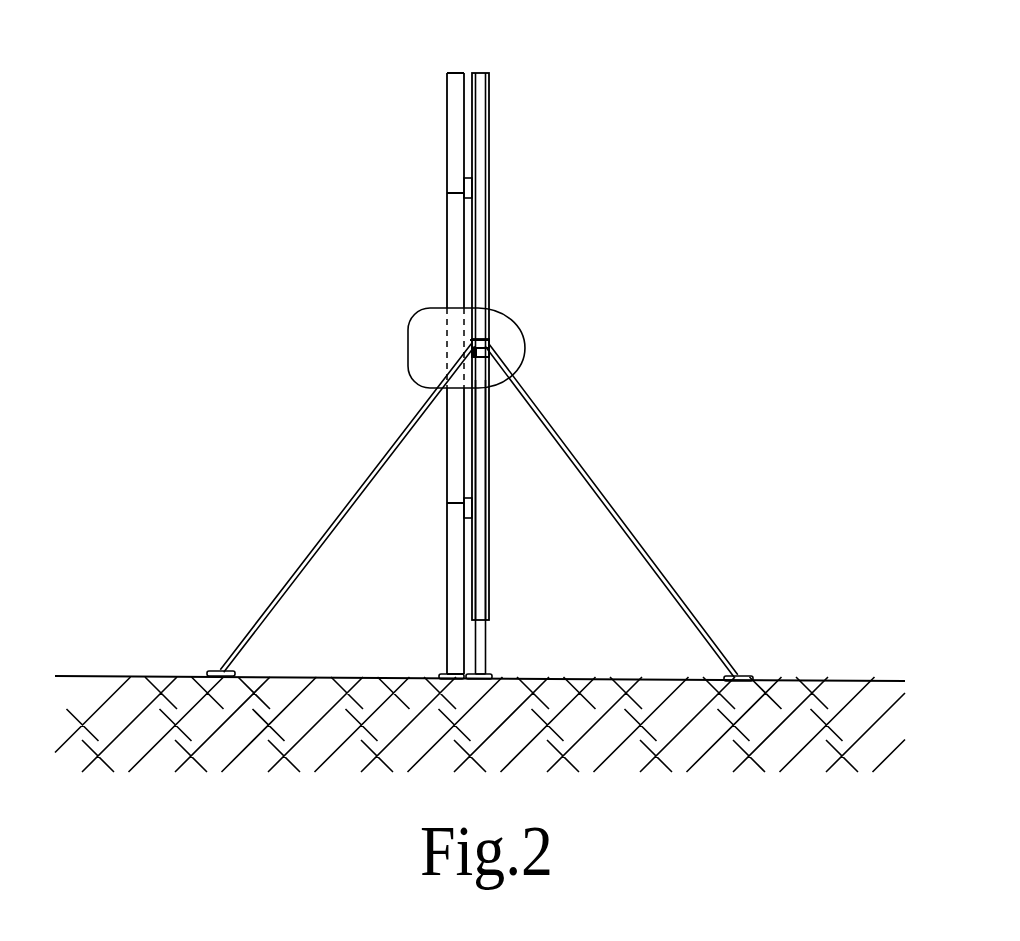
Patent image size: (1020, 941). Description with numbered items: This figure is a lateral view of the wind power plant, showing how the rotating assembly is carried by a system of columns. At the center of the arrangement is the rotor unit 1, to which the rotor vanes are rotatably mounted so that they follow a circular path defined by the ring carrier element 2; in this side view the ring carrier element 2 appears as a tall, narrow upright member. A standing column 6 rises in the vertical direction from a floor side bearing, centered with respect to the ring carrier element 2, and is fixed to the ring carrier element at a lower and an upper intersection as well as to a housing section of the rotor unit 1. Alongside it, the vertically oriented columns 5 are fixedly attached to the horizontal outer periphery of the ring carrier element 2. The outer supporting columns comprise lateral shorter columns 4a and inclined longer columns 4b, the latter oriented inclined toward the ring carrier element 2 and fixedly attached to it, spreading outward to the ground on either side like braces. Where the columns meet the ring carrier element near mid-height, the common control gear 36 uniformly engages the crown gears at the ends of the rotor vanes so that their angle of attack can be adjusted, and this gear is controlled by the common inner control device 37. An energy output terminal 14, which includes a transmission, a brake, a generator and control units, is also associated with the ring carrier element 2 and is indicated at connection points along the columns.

The rotor unit 1 is at (551, 337).
The ring carrier element 2 is at (488, 85).
The lateral shorter supporting columns 4a is at (480, 490).
The inclined longer supporting columns 4b is at (335, 522).
The vertical columns 5 is at (482, 133).
The standing column 6 is at (447, 648).
The energy output terminal 14 is at (463, 187).
The common control gear 36 is at (488, 343).
The common inner control device 37 is at (493, 353).